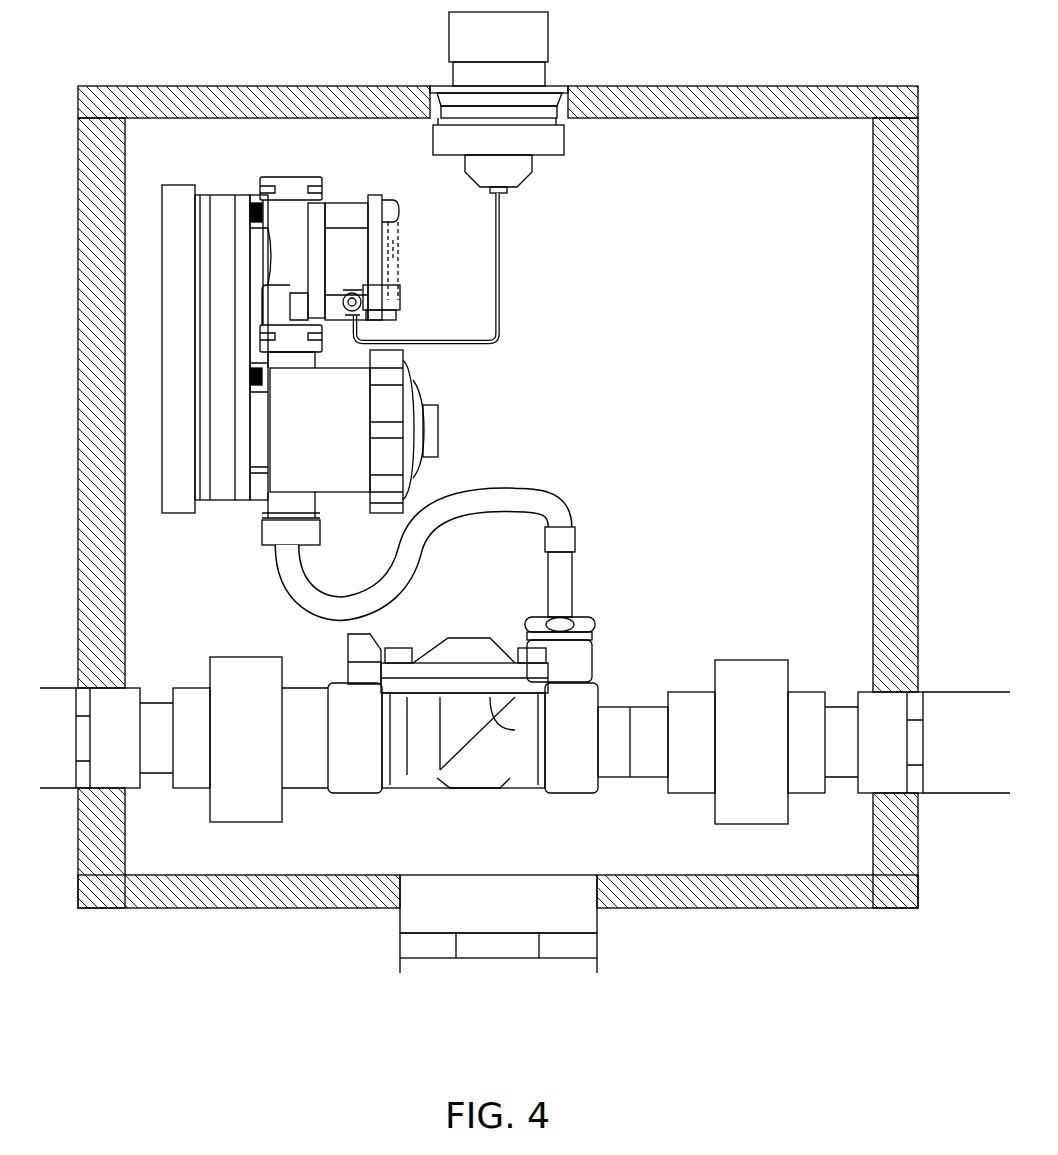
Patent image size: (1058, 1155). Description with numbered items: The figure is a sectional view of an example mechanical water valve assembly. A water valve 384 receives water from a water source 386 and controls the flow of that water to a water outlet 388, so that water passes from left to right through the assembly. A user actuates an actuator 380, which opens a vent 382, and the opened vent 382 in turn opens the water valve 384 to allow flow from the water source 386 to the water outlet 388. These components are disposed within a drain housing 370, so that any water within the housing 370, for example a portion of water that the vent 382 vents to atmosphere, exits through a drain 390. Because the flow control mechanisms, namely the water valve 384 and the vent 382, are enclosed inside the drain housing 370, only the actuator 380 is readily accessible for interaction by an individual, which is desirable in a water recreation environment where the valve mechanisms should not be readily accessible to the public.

The drain housing 370 is at (893, 131).
The actuator 380 is at (531, 42).
The vent 382 is at (228, 508).
The water valve 384 is at (610, 677).
The water source 386 is at (185, 773).
The water outlet 388 is at (874, 778).
The drain 390 is at (517, 950).